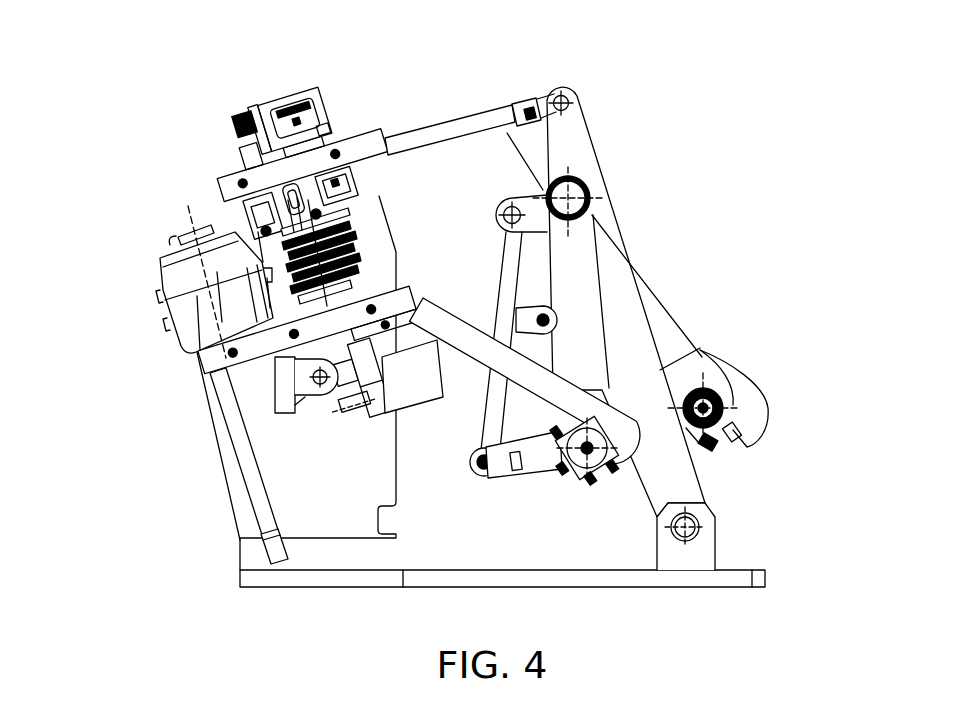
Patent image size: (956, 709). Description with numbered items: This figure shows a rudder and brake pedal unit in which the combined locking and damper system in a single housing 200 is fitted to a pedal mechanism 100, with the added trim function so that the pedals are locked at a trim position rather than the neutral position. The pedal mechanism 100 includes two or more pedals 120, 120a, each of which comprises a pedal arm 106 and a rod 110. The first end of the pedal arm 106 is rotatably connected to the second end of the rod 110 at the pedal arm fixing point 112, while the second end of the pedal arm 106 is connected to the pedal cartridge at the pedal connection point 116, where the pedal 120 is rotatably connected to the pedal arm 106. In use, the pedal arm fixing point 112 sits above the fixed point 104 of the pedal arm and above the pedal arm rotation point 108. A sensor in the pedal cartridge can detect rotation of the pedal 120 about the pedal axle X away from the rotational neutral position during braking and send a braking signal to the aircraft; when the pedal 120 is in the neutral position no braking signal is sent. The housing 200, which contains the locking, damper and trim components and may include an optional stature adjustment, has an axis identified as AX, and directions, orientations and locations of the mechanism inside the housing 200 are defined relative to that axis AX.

The pedal mechanism 100 is at (601, 130).
The fixed point 104 is at (718, 526).
The pedal arm 106 is at (582, 292).
The pedal arm rotation point 108 is at (582, 196).
The rod 110 is at (444, 137).
The pedal arm fixing point 112 is at (560, 88).
The pedal connection point 116 is at (720, 428).
The pedal 120 is at (551, 386).
The pedal 120a is at (732, 382).
The housing 200 is at (190, 277).
The pedal axle X is at (550, 483).
The axis through the housing AX is at (208, 272).